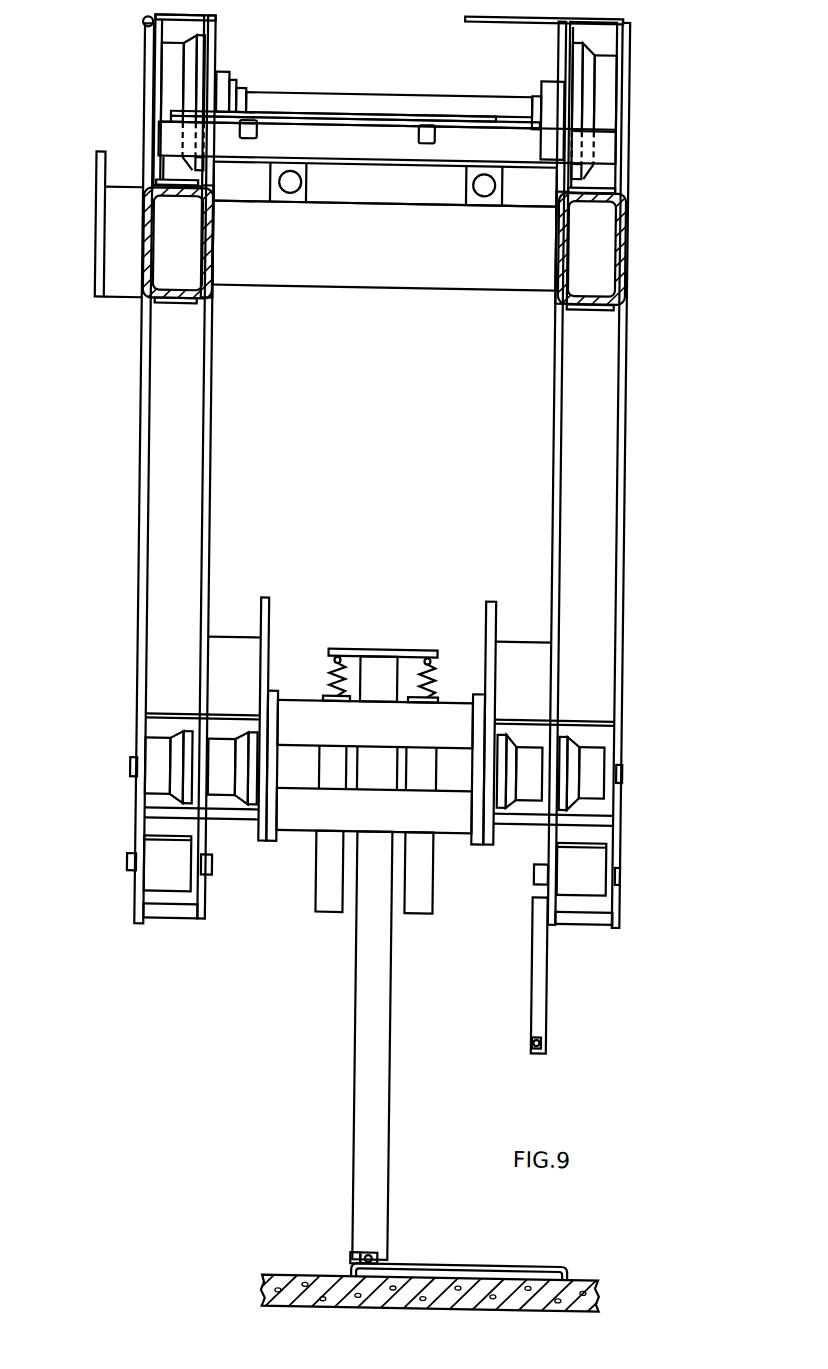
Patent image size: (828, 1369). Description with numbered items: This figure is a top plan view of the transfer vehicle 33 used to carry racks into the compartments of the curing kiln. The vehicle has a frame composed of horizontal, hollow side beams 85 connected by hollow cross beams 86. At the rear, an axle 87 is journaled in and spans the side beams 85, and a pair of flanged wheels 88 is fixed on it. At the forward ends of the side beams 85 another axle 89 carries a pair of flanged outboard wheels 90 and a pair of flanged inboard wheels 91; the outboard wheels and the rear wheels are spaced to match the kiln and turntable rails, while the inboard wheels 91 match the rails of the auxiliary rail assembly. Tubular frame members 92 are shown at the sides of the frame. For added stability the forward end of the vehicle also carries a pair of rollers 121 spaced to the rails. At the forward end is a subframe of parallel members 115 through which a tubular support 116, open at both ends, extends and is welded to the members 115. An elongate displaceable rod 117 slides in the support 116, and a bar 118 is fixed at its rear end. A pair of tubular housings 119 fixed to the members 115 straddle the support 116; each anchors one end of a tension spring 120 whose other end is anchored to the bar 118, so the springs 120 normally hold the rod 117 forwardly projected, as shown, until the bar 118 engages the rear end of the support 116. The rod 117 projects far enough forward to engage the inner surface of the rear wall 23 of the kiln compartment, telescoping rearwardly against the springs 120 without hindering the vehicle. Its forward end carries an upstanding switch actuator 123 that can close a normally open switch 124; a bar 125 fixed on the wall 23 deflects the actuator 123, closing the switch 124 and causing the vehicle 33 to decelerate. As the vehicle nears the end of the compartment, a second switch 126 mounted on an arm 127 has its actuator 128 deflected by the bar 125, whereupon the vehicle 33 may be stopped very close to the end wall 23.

The rear wall 23 is at (595, 1272).
The transfer vehicle 33 is at (644, 424).
The side beams 85 is at (204, 474).
The cross beams 86 is at (505, 278).
The axle 87 is at (429, 102).
The flanged wheels 88 is at (184, 66).
The axle 89 is at (624, 768).
The flanged outboard wheels 90 is at (160, 752).
The flanged inboard wheels 91 is at (227, 750).
The tubular frame members 92 is at (194, 259).
The parallel members 115 is at (360, 737).
The tubular support 116 is at (385, 696).
The displaceable rod 117 is at (390, 1090).
The bar 118 is at (407, 652).
The tubular housings 119 is at (324, 884).
The tension springs 120 is at (327, 686).
The rollers 121 is at (162, 887).
The switch actuator 123 is at (364, 1254).
The switch 124 is at (382, 1256).
The bar 125 is at (470, 1262).
The second switch 126 is at (544, 1034).
The arm 127 is at (550, 989).
The actuator 128 is at (544, 1050).